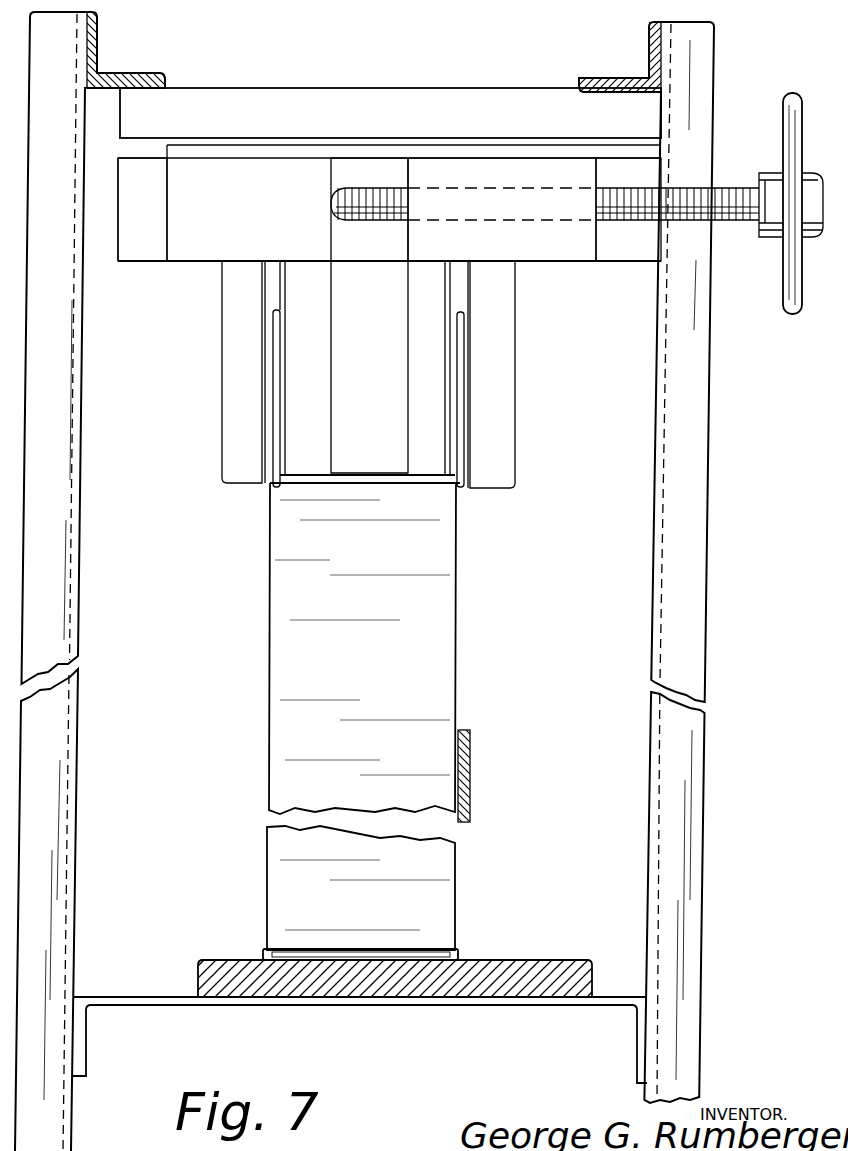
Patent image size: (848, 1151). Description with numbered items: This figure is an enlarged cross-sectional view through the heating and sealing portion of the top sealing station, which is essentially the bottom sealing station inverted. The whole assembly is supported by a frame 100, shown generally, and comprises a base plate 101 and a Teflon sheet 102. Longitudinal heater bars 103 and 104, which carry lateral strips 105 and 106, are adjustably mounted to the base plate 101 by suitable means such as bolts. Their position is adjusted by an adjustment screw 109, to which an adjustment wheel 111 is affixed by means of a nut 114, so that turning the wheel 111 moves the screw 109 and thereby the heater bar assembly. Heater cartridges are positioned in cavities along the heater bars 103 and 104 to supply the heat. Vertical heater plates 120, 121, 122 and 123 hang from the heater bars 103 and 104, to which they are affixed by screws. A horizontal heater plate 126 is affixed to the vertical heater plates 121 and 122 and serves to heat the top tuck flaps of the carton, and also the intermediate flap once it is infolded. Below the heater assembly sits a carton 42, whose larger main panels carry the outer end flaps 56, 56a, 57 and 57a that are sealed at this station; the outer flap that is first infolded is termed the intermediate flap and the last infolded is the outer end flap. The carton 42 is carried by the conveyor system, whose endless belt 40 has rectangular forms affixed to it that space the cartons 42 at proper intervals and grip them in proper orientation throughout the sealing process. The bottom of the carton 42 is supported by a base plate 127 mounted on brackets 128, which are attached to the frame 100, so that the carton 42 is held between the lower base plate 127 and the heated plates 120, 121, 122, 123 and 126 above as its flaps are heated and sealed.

The frame 100 is at (716, 58).
The base plate 101 is at (355, 125).
The Teflon sheet 102 is at (646, 153).
The longitudinal heater bar 103 is at (555, 258).
The longitudinal heater bar 104 is at (262, 221).
The lateral strip 105 is at (633, 256).
The lateral strip 106 is at (130, 249).
The adjustment screw 109 is at (738, 221).
The adjustment wheel 111 is at (793, 314).
The nut 114 is at (815, 178).
The vertical heater plate 120 is at (502, 432).
The vertical heater plate 121 is at (417, 363).
The vertical heater plate 122 is at (320, 350).
The vertical heater plate 123 is at (227, 440).
The horizontal heater plate 126 is at (352, 480).
The carton 42 is at (382, 658).
The endless belt 40 is at (471, 764).
The outer end flap 56 is at (390, 950).
The outer end flap 56a is at (462, 357).
The outer end flap 57 is at (367, 960).
The outer end flap 57a is at (273, 365).
The base plate 127 is at (486, 997).
The bracket 128 is at (568, 998).